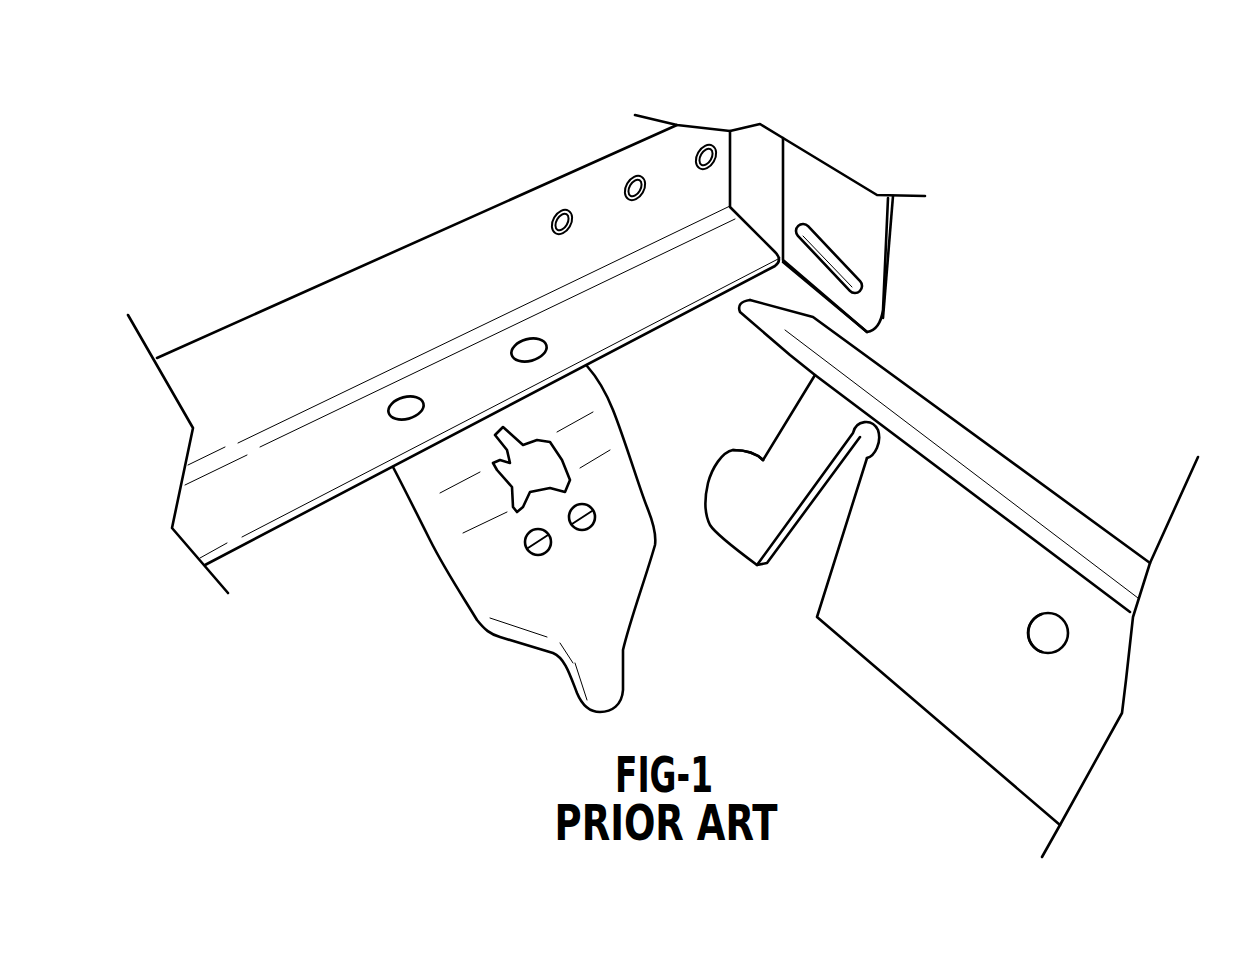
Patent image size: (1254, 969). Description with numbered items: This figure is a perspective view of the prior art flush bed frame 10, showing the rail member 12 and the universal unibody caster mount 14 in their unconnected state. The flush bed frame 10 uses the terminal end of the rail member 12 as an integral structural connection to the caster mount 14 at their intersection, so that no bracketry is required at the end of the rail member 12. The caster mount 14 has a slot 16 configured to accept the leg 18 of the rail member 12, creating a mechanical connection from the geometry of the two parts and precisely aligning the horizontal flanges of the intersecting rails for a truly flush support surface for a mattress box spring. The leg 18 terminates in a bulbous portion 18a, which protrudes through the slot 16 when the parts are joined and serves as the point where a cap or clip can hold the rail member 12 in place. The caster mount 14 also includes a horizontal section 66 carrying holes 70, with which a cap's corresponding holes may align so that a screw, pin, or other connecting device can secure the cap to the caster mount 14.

The flush bed frame 10 is at (1082, 218).
The rail member 12 is at (883, 613).
The universal unibody caster mount 14 is at (292, 492).
The slot 16 is at (527, 475).
The leg 18 is at (738, 522).
The bulbous portion 18a is at (718, 460).
The horizontal section 66 is at (590, 330).
The holes 70 is at (405, 405).